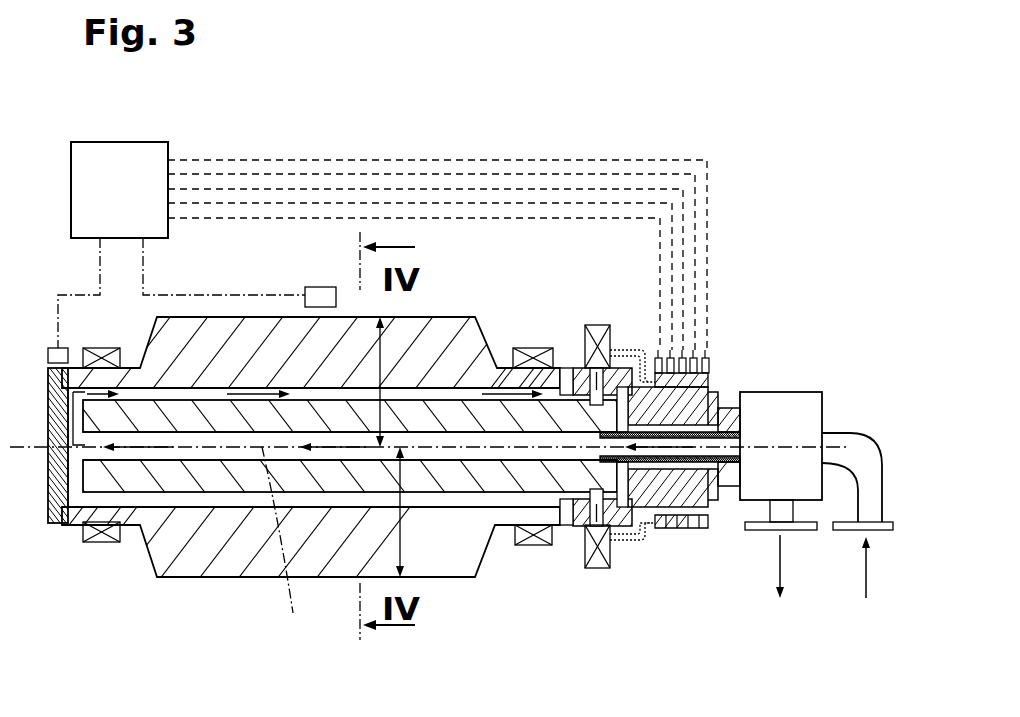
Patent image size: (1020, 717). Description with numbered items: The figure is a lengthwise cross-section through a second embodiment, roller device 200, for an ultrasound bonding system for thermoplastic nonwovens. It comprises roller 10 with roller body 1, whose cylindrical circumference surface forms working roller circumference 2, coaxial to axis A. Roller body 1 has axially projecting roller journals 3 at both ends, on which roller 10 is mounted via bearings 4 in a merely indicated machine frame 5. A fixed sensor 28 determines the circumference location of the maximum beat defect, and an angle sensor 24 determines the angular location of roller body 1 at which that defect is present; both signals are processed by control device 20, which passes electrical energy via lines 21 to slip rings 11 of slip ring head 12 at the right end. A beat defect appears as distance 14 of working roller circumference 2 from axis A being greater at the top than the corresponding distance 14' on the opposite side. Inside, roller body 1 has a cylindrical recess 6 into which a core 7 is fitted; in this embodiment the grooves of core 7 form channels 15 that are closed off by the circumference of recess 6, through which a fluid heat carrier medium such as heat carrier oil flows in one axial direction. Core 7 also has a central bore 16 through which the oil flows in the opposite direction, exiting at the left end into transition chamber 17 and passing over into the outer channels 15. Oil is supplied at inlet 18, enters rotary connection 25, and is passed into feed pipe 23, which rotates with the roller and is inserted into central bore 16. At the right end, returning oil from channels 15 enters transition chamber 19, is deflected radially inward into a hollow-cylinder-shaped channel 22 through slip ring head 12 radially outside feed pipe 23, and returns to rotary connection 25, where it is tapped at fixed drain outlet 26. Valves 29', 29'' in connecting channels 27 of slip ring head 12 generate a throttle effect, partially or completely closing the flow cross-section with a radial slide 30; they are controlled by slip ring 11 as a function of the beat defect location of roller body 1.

The roller body 1 is at (490, 362).
The working roller circumference 2 is at (458, 317).
The roller journal 3 is at (72, 513).
The bearing 4 is at (100, 348).
The machine frame 5 is at (100, 553).
The cylindrical recess 6 is at (189, 504).
The core 7 is at (228, 478).
The roller 10 is at (482, 304).
The slip ring 11 is at (670, 528).
The slip ring head 12 is at (722, 498).
The distance 14 is at (408, 382).
The distance 14' is at (364, 512).
The channel 15 is at (203, 396).
The central bore 16 is at (457, 452).
The transition chamber 17 is at (73, 481).
The inlet 18 is at (890, 531).
The transition chamber 19 is at (638, 530).
The control device 20 is at (132, 202).
The lines 21 is at (345, 189).
The channel 22 is at (692, 428).
The feed pipe 23 is at (717, 433).
The angle sensor 24 is at (55, 347).
The rotary connection 25 is at (806, 424).
The drain outlet 26 is at (800, 531).
The connecting channel 27 is at (565, 370).
The sensor 28 is at (322, 299).
The valve 29' is at (615, 315).
The valve 29'' is at (608, 587).
The radial slide 30 is at (582, 368).
The roller device 200 is at (632, 150).
The axis A is at (283, 547).